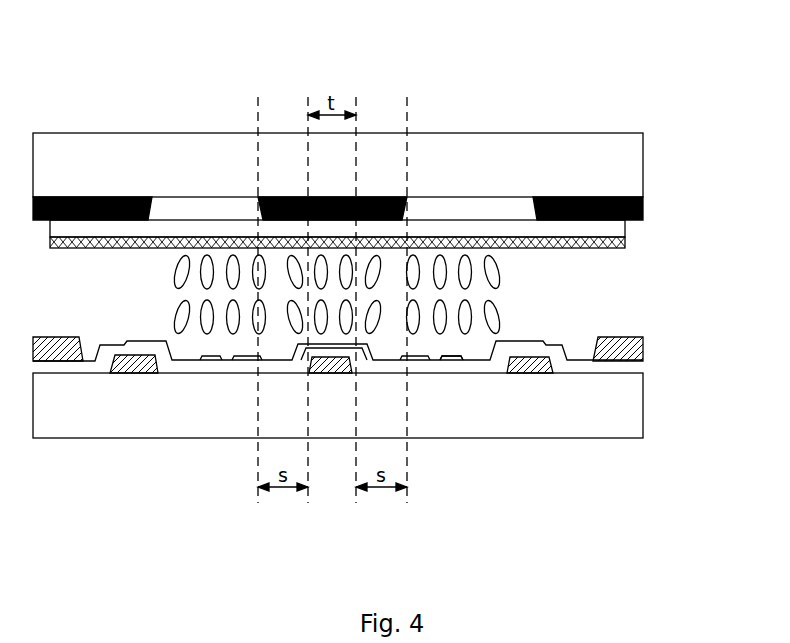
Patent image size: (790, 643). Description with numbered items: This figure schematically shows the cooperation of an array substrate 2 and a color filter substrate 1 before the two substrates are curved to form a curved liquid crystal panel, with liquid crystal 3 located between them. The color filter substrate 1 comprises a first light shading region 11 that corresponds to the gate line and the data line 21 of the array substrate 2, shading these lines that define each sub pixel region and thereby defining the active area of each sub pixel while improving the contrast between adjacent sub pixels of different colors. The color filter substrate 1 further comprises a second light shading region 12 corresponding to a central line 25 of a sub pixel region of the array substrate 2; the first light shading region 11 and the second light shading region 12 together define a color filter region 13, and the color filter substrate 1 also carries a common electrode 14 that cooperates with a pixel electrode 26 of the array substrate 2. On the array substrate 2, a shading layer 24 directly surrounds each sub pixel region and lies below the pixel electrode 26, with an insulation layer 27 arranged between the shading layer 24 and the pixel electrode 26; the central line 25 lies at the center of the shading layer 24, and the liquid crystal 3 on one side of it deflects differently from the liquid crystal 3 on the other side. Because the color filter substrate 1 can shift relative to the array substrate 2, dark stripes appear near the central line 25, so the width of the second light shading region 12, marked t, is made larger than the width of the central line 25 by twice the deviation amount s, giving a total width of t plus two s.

The color filter substrate 1 is at (388, 184).
The first light shading region 11 is at (643, 218).
The second light shading region 12 is at (385, 197).
The color filter region 13 is at (618, 228).
The common electrode 14 is at (597, 248).
The array substrate 2 is at (368, 439).
The data line 21 is at (633, 352).
The shading layer 24 is at (527, 362).
The central line 25 is at (331, 365).
The pixel electrode 26 is at (447, 358).
The insulation layer 27 is at (197, 360).
The liquid crystal 3 is at (495, 315).